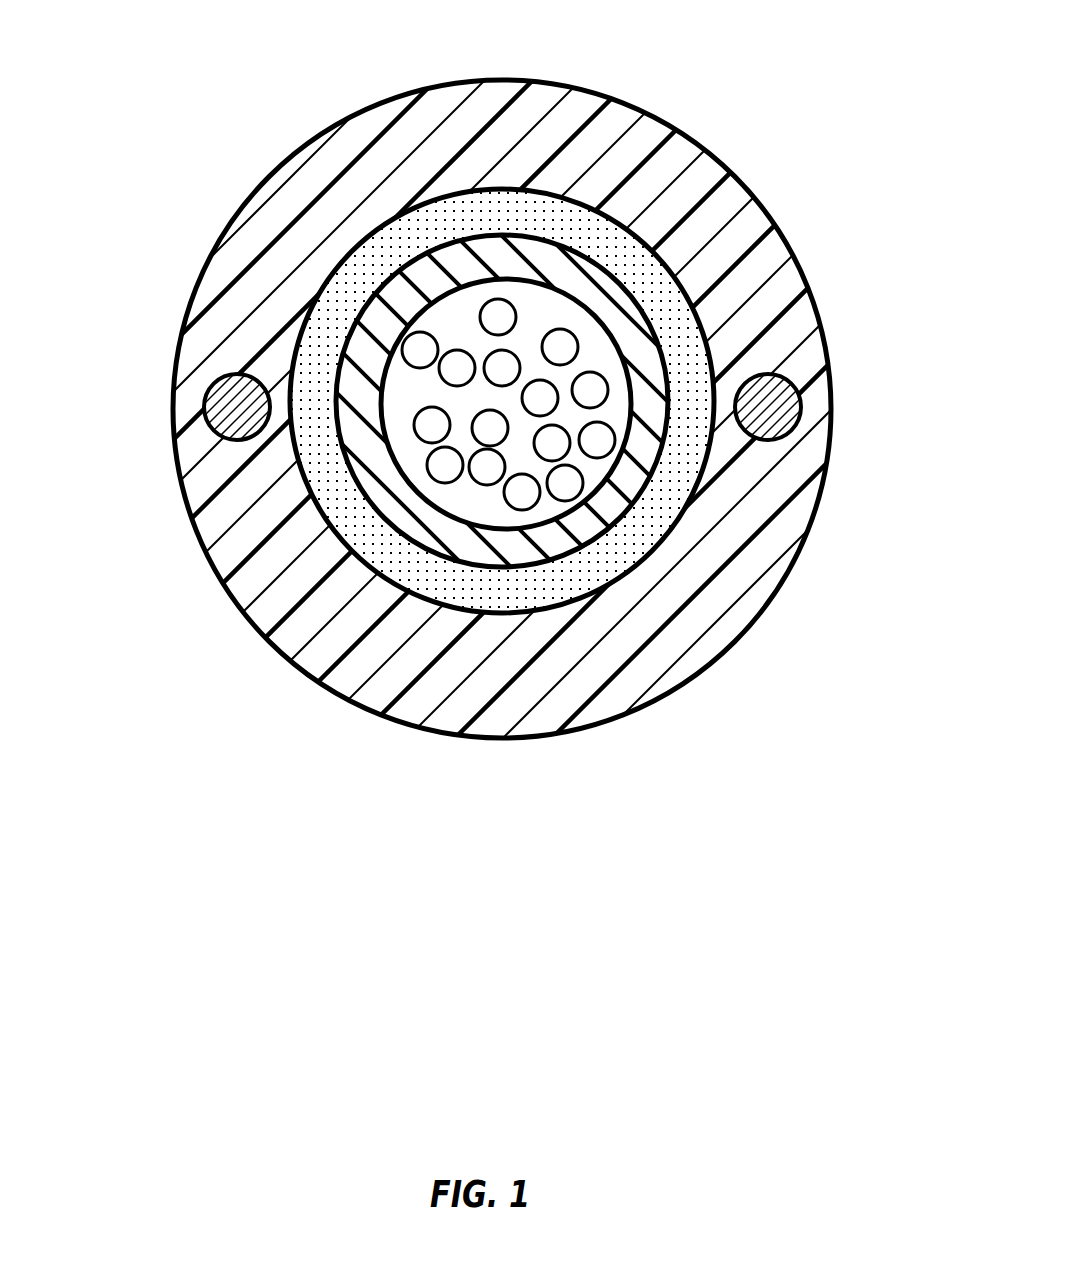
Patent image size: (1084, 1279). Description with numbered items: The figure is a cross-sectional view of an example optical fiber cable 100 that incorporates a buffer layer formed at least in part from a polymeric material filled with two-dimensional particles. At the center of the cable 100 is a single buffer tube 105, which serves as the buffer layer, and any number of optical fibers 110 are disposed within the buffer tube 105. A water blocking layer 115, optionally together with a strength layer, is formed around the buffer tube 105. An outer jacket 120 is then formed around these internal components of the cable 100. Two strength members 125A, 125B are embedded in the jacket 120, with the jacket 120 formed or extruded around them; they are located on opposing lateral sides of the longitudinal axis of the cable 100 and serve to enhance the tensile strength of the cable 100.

The optical fiber cable 100 is at (542, 427).
The buffer tube 105 is at (622, 500).
The optical fibers 110 is at (477, 495).
The water blocking layer 115 is at (632, 277).
The outer jacket 120 is at (518, 163).
The strength member 125A is at (235, 408).
The strength member 125B is at (775, 405).